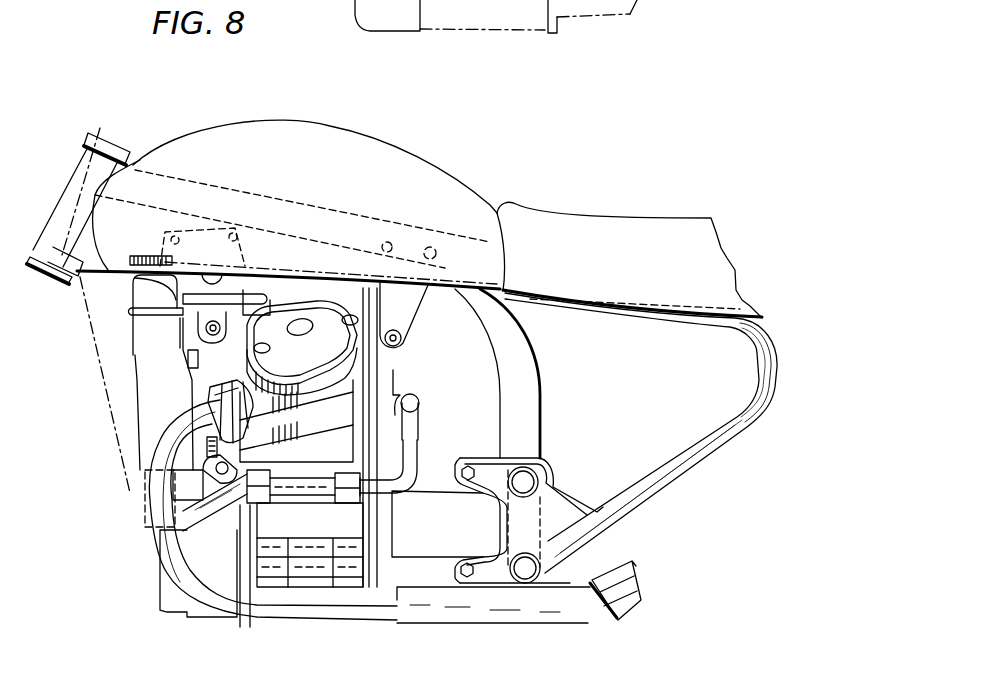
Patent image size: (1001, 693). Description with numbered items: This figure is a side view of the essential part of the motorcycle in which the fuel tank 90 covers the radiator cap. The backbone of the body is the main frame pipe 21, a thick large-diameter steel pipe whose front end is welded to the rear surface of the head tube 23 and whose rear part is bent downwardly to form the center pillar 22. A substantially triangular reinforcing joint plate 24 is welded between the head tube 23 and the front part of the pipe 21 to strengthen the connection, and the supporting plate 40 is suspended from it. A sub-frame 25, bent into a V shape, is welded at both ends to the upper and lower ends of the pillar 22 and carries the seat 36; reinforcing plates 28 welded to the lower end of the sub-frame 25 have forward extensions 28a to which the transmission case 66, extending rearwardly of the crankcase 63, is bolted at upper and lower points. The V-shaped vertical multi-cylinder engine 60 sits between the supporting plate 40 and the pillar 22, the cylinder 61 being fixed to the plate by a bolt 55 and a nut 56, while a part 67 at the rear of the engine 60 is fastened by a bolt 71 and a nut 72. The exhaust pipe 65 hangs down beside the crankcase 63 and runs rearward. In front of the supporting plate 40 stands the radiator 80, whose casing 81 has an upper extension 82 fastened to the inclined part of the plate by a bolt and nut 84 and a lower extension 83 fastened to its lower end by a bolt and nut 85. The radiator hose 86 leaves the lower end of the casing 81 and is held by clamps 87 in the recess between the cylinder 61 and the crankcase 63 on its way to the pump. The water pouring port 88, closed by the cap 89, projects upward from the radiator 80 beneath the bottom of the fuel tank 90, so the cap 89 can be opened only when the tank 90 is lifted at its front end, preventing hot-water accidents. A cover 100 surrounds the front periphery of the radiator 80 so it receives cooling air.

The main frame pipe 21 is at (330, 190).
The center pillar 22 is at (530, 367).
The head tube 23 is at (83, 182).
The reinforcing joint plate 24 is at (73, 240).
The sub-frame 25 is at (707, 447).
The reinforcing plate 28 is at (553, 513).
The extension 28a is at (488, 473).
The seat 36 is at (665, 218).
The supporting plate 40 is at (183, 303).
The bolt 55 is at (208, 390).
The nut 56 is at (205, 463).
The V-shaped vertical multi-cylinder engine 60 is at (338, 458).
The cylinder 61 is at (333, 342).
The crankcase 63 is at (497, 33).
The exhaust pipe 65 is at (247, 590).
The transmission case 66 is at (317, 567).
The part 67 is at (380, 363).
The bolt 71 is at (398, 300).
The nut 72 is at (402, 338).
The radiator 80 is at (152, 364).
The casing 81 is at (160, 417).
The upper extension 82 is at (190, 333).
The lower extension 83 is at (203, 447).
The bolt and nut 84 is at (213, 320).
The bolt and nut 85 is at (250, 473).
The radiator hose 86 is at (315, 495).
The clamp 87 is at (252, 500).
The water pouring port 88 is at (130, 288).
The cap 89 is at (110, 275).
The fuel tank 90 is at (323, 132).
The cover 100 is at (147, 470).